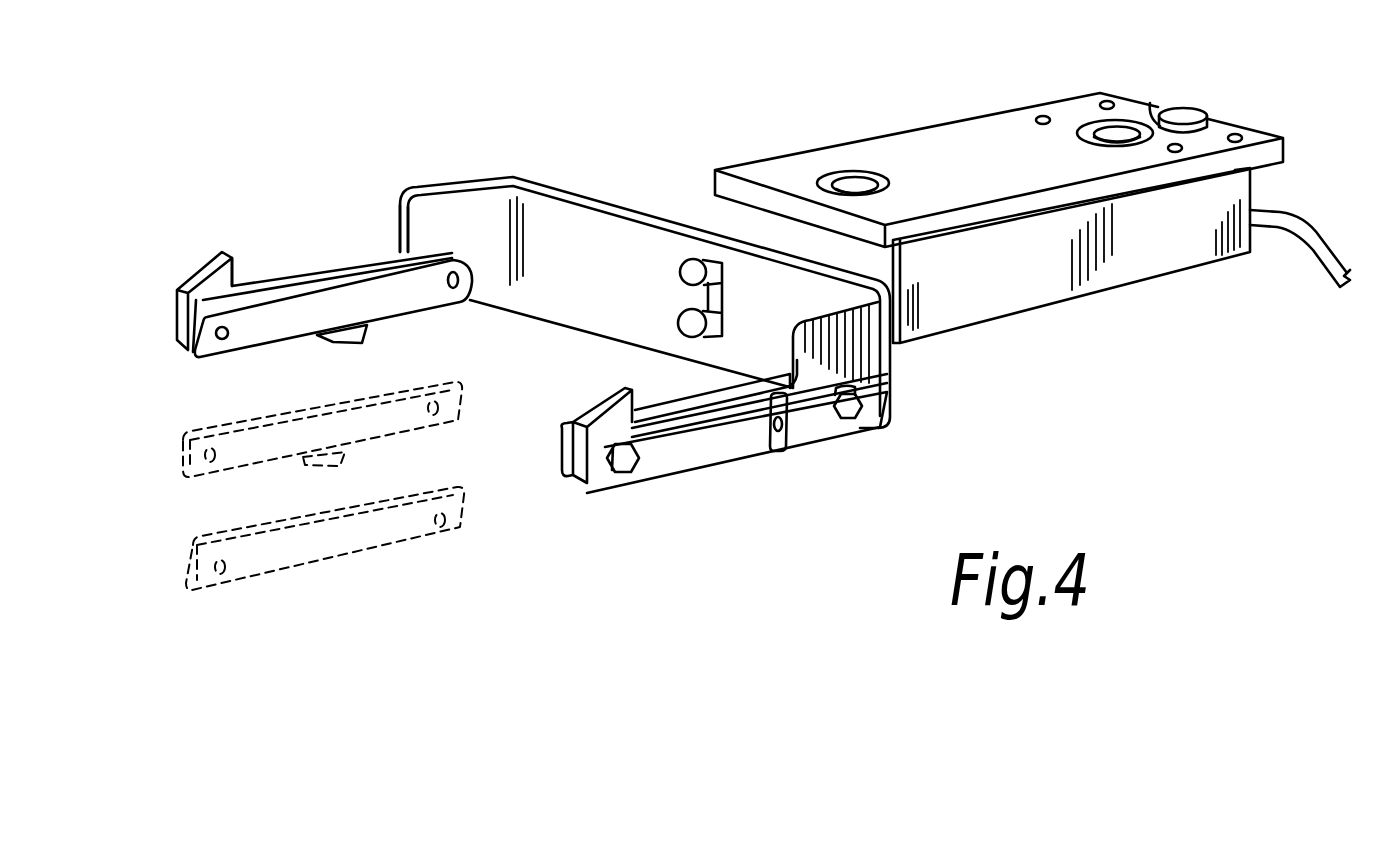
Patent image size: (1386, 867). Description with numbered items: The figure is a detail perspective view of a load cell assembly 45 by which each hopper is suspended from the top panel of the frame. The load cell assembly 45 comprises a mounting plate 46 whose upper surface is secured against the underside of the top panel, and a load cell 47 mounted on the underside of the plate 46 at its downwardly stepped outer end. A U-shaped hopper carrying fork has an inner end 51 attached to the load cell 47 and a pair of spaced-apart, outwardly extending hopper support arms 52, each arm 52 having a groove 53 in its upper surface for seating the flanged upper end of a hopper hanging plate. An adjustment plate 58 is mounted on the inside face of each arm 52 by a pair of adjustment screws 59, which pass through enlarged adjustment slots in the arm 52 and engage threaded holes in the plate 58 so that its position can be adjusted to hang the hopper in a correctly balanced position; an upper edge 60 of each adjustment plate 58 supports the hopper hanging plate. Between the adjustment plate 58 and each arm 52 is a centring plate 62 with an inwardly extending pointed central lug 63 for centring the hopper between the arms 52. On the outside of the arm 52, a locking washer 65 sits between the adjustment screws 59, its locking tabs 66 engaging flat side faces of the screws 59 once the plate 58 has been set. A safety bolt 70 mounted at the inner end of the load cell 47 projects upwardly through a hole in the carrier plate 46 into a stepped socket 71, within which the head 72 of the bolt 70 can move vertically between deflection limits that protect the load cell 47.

The load cell assembly 45 is at (737, 130).
The mounting plate 46 is at (1004, 126).
The load cell 47 is at (1123, 273).
The inner end 51 is at (567, 222).
The hopper support arm 52 is at (428, 210).
The groove 53 is at (263, 267).
The adjustment plate 58 is at (303, 310).
The adjustment screw 59 is at (452, 278).
The upper edge 60 is at (664, 400).
The centring plate 62 is at (177, 333).
The pointed central lug 63 is at (333, 350).
The locking washer 65 is at (733, 437).
The locking tab 66 is at (847, 383).
The safety bolt 70 is at (863, 178).
The stepped socket 71 is at (897, 178).
The head 72 is at (851, 178).